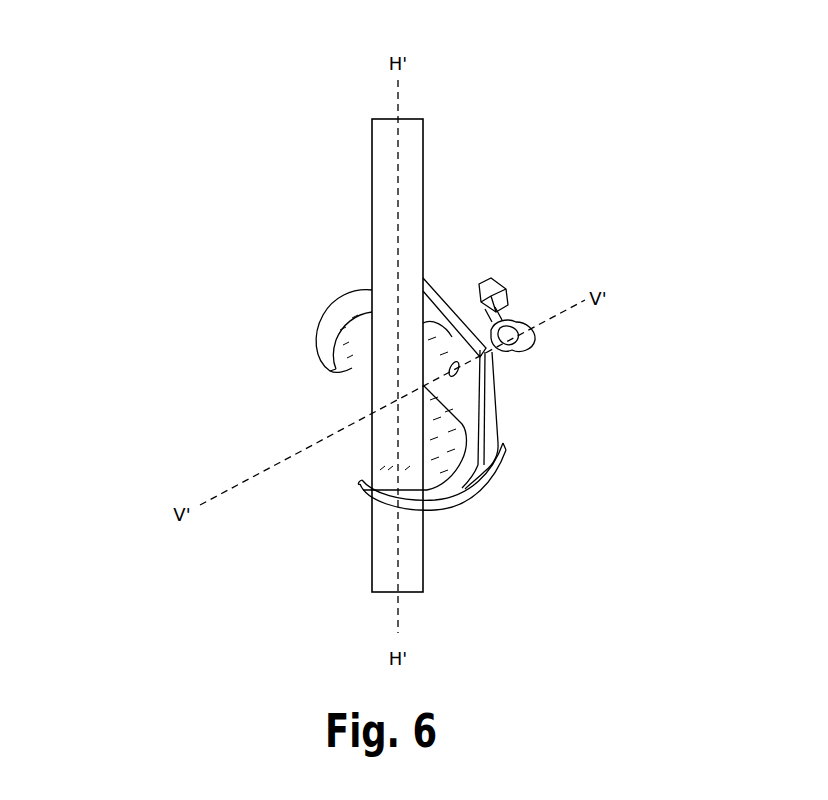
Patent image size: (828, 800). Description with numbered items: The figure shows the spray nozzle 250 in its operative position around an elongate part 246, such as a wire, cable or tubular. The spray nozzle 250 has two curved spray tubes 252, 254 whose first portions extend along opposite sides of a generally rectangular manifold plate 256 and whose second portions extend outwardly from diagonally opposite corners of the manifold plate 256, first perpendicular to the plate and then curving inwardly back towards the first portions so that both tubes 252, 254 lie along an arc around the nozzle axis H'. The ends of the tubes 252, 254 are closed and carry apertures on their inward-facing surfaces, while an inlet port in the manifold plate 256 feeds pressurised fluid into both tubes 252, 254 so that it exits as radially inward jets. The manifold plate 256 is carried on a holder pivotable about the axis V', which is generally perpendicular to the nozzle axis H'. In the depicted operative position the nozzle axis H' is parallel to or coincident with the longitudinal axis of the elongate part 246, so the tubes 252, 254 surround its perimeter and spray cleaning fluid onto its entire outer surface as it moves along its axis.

The elongate part 246 is at (408, 172).
The spray nozzle 250 is at (505, 393).
The curved spray tube 252 is at (342, 310).
The curved spray tube 254 is at (455, 490).
The manifold plate 256 is at (492, 410).